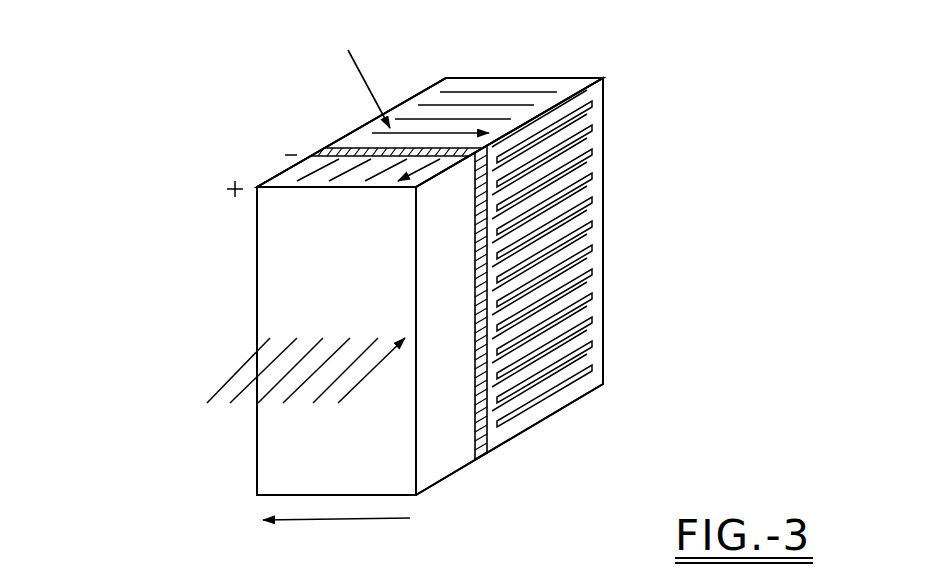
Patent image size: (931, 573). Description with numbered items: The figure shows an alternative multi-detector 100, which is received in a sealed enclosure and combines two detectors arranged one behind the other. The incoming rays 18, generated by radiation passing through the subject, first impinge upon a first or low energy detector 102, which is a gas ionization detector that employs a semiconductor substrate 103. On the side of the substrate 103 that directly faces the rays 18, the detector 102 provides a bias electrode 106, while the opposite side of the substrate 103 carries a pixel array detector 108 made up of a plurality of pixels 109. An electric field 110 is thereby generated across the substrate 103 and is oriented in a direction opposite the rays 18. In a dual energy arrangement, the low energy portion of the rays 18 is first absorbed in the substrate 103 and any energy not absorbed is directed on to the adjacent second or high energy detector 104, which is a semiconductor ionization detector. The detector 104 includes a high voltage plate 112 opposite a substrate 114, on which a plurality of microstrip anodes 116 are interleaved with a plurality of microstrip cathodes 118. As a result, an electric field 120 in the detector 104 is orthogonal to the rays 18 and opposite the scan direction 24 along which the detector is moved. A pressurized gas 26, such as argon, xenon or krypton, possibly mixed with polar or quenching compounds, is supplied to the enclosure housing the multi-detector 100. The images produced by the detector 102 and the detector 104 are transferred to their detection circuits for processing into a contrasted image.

The multi-detector 100 is at (212, 83).
The first or low energy detector 102 is at (277, 172).
The semiconductor substrate 103 is at (277, 448).
The second or high energy detector 104 is at (357, 128).
The bias electrode 106 is at (293, 262).
The pixel array detector 108 is at (320, 152).
The pixels 109 is at (483, 457).
The electric field 110 is at (330, 174).
The high voltage plate 112 is at (450, 78).
The substrate 114 is at (578, 393).
The microstrip anodes 116 is at (585, 125).
The microstrip cathodes 118 is at (587, 178).
The electric field 120 is at (508, 92).
The pressurized gas 26 is at (348, 50).
The rays 18 is at (228, 380).
The scan direction 24 is at (318, 519).